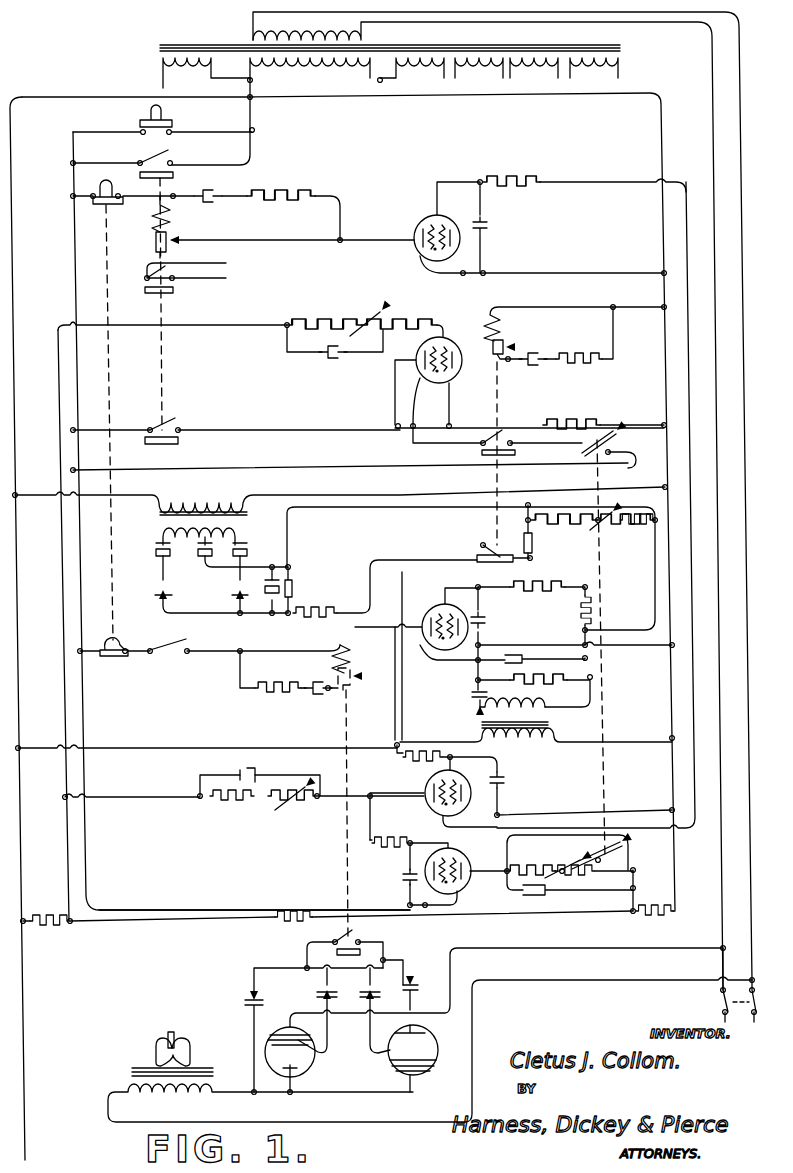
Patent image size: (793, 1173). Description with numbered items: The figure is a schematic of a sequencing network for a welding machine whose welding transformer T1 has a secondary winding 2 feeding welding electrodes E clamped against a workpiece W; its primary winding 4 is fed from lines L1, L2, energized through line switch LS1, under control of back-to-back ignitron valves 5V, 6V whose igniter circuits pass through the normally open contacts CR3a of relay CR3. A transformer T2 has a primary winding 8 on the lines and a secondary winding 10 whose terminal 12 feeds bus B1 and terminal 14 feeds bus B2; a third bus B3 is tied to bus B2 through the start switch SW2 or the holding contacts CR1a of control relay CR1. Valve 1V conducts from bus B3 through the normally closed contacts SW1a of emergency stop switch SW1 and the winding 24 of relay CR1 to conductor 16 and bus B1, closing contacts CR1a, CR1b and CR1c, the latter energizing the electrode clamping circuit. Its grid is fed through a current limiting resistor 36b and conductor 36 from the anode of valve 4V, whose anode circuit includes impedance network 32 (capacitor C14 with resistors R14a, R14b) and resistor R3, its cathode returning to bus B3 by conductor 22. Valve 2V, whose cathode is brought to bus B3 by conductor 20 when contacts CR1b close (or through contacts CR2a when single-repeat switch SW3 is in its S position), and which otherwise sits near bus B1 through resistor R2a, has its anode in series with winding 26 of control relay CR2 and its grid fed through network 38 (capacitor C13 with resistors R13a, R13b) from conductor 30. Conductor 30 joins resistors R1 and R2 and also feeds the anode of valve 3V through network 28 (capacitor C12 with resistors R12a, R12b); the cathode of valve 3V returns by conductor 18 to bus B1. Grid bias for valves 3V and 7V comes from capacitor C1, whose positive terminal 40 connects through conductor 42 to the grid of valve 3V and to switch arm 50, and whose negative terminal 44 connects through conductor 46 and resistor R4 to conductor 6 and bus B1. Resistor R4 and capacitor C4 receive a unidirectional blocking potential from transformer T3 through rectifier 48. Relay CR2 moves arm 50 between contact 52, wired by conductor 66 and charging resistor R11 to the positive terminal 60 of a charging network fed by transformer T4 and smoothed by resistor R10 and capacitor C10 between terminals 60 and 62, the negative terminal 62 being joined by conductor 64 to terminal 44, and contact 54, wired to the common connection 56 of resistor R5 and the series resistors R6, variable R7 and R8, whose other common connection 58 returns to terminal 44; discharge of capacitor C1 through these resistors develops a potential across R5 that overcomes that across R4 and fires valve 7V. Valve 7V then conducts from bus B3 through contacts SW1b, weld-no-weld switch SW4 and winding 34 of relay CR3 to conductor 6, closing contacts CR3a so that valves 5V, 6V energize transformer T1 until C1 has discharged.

The bus B1 is at (661, 125).
The bus B2 is at (11, 137).
The third bus B3 is at (72, 162).
The primary winding 8 is at (253, 20).
The transformer T2 is at (430, 501).
The second terminal 14 is at (253, 96).
The secondary winding 10 is at (312, 73).
The terminal 12 is at (380, 83).
The start switch SW2 is at (178, 122).
The contacts of relay CR1 CR1a is at (170, 163).
The emergency stop switch SW1 is at (112, 186).
The contacts of emergency stop switch SW1a is at (97, 203).
The energizing winding of relay CR1 24 is at (160, 230).
The control relay CR1 is at (168, 252).
The contacts of relay CR1 CR1c is at (172, 292).
The valve 1V is at (413, 212).
The conductor 36 is at (580, 182).
The resistor 36b is at (584, 184).
The conductor 16 is at (565, 273).
The impedance network 38 is at (283, 340).
The resistor R13b is at (318, 318).
The adjustable resistor R13a is at (396, 314).
The capacitor C13 is at (338, 360).
The valve 2V is at (455, 378).
The energizing winding of relay CR2 26 is at (488, 332).
The control relay CR2 is at (497, 380).
The conductor 20 is at (260, 428).
The contacts of relay CR1 CR1b is at (178, 428).
The contacts of relay CR2 CR2a is at (498, 430).
The resistor R2a is at (600, 417).
The single-repeat weld switch SW3 is at (605, 690).
The transformer T4 is at (157, 514).
The resistor R10 is at (272, 575).
The negative terminal 62 is at (290, 563).
The capacitor C10 is at (292, 590).
The charging current limiting resistor R11 is at (318, 605).
The positive terminal 60 is at (300, 614).
The conductor 64 is at (400, 512).
The conductor 66 is at (378, 558).
The second contact 54 is at (475, 545).
The switch arm 50 is at (483, 543).
The contact 52 is at (477, 565).
The common connection 56 is at (523, 538).
The capacitor C1 is at (535, 545).
The positive terminal 40 is at (533, 560).
The negative terminal 44 is at (528, 503).
The resistance element R6 is at (565, 515).
The variable resistance element R7 is at (597, 517).
The resistance element R8 is at (635, 515).
The common connection 58 is at (653, 522).
The conductor 46 is at (655, 588).
The valve 7V is at (425, 650).
The resistor R5 is at (575, 605).
The conductor 6 is at (505, 645).
The capacitor C4 is at (525, 655).
The resistor R4 is at (540, 685).
The rectifying element 48 is at (476, 703).
The transformer T3 is at (555, 730).
The conductor 42 is at (402, 690).
The contacts of emergency stop switch SW1b is at (80, 651).
The weld-no-weld switch SW4 is at (170, 648).
The energizing winding of relay CR3 34 is at (350, 628).
The relay CR3 is at (345, 708).
The conductor 30 is at (60, 688).
The impedance network 28 is at (190, 780).
The capacitor C12 is at (245, 765).
The resistor R12b is at (230, 805).
The resistor R12a is at (285, 812).
The conductor 22 is at (90, 840).
The valve 3V is at (410, 782).
The conductor 18 is at (545, 812).
The valve 4V is at (462, 888).
The resistor R14b is at (522, 862).
The resistor R14a is at (548, 858).
The capacitor C14 is at (535, 897).
The impedance network 32 is at (640, 875).
The resistor R3 is at (648, 918).
The electrical line L1 is at (720, 910).
The electrical line L2 is at (752, 905).
The resistor R1 is at (50, 923).
The resistor R2 is at (300, 925).
The contacts of relay CR3 CR3a is at (360, 940).
The ignitron valve 5V is at (300, 1075).
The ignitron valve 6V is at (440, 1075).
The primary winding 4 is at (172, 1093).
The welding transformer T1 is at (128, 1072).
The secondary winding 2 is at (192, 1055).
The workpiece W is at (170, 1030).
The welding electrodes E is at (160, 1040).
The line switch LS1 is at (720, 1000).